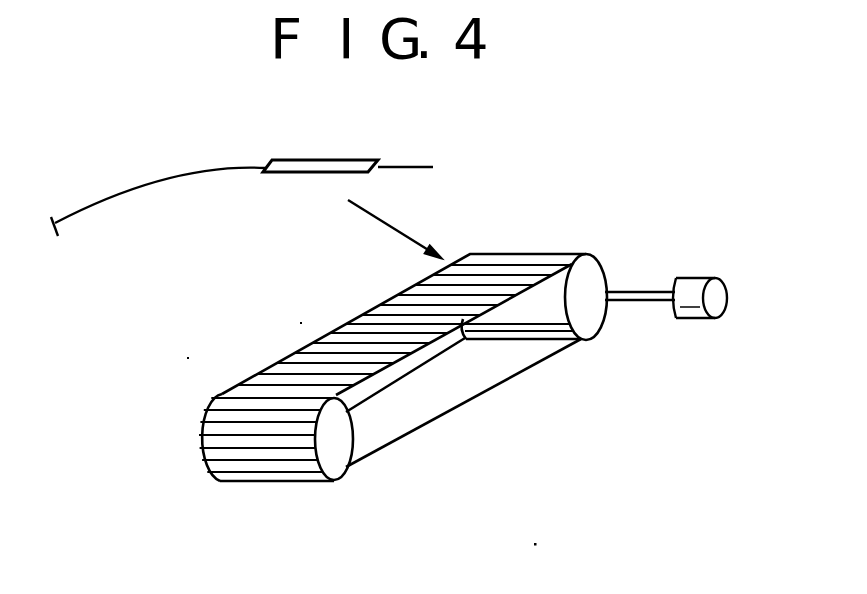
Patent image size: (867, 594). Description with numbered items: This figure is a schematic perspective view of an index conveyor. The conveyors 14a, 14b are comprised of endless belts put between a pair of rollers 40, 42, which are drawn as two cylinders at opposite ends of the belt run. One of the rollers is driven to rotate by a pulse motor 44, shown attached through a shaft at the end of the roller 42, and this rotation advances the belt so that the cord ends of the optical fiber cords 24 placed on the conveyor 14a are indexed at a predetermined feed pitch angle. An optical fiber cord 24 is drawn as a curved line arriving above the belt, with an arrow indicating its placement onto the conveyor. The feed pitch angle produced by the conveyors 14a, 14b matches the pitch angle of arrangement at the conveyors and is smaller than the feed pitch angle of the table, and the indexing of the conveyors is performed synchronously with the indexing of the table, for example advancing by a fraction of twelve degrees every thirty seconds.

The optical fiber cord 24 is at (148, 186).
The conveyor 14a is at (366, 360).
The conveyor 14b is at (280, 361).
The roller 40 is at (330, 456).
The roller 42 is at (588, 320).
The pulse motor 44 is at (688, 283).